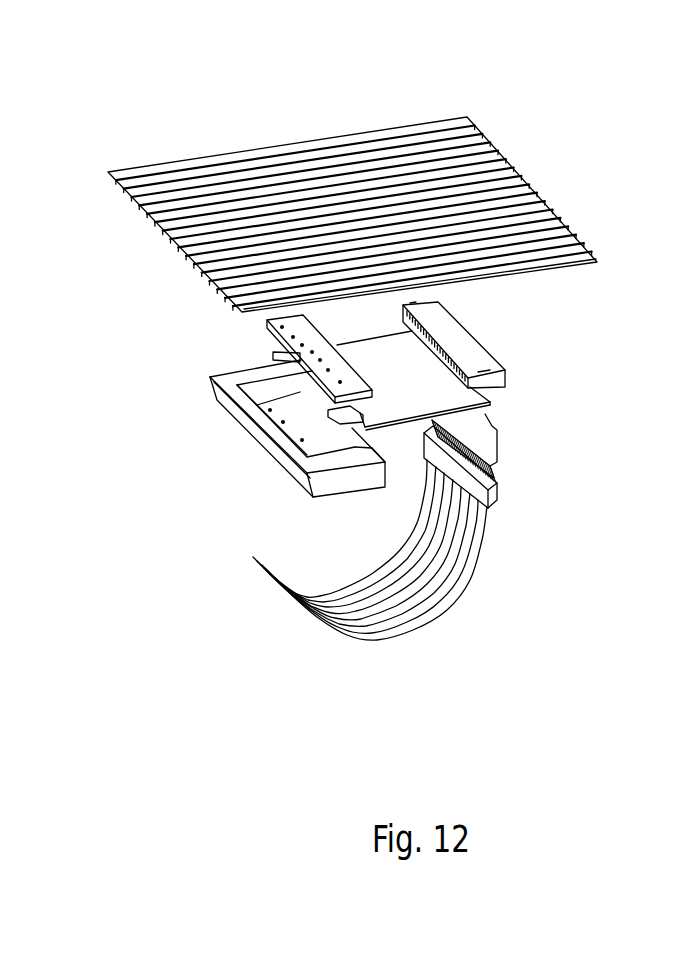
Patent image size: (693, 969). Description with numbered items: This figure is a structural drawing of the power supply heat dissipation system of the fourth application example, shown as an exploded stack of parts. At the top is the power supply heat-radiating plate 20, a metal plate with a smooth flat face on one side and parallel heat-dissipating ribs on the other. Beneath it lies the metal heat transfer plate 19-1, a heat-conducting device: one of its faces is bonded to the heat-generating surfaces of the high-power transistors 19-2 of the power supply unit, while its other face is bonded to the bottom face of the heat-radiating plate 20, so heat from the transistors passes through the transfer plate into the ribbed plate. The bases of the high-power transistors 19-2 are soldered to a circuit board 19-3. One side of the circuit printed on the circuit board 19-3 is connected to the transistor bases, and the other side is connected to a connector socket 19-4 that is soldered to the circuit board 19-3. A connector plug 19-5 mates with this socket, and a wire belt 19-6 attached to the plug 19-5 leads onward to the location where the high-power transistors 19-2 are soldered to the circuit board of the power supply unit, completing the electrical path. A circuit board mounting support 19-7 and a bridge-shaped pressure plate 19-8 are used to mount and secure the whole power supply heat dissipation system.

The power supply heat-radiating plate 20 is at (375, 185).
The heat transfer plate 19-1 is at (215, 359).
The high-power transistors 19-2 is at (215, 388).
The circuit board 19-3 is at (505, 362).
The connector socket 19-4 is at (544, 440).
The connector plug 19-5 is at (535, 467).
The wire belt 19-6 is at (443, 550).
The circuit board mounting support 19-7 is at (522, 340).
The bridge-shaped pressure plate 19-8 is at (255, 428).